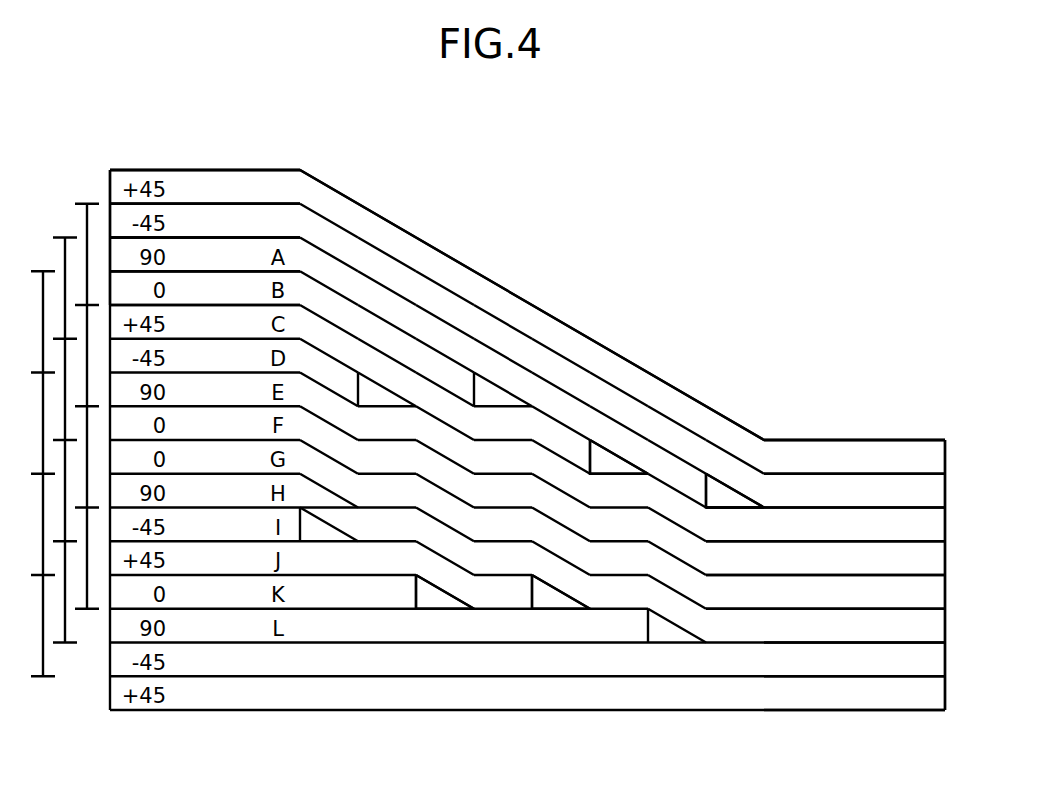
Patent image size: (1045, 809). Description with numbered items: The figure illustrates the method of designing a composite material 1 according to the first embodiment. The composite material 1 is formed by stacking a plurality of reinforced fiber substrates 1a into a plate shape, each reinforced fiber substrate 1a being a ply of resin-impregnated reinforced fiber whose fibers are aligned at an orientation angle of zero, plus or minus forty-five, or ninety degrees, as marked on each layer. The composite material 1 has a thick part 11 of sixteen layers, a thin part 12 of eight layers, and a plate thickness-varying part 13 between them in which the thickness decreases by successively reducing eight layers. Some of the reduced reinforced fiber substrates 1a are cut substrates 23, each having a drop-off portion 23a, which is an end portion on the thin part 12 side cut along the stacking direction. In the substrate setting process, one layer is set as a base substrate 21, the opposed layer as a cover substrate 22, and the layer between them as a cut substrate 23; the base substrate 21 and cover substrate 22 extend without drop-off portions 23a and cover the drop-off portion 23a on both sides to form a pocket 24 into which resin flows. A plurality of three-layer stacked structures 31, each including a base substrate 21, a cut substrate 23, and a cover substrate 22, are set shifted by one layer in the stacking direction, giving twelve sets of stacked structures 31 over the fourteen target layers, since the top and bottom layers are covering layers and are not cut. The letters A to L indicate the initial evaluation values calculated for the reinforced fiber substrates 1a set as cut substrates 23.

The composite material 1 is at (700, 227).
The reinforced fiber substrate 1a is at (885, 490).
The thick part 11 is at (175, 169).
The thin part 12 is at (850, 438).
The plate thickness-varying part 13 is at (570, 327).
The base substrate 21 is at (212, 288).
The cover substrate 22 is at (187, 220).
The cut substrate 23 is at (197, 257).
The drop-off portion 23a is at (417, 593).
The pocket 24 is at (725, 495).
The three-layer stacked structure 31 is at (63, 257).